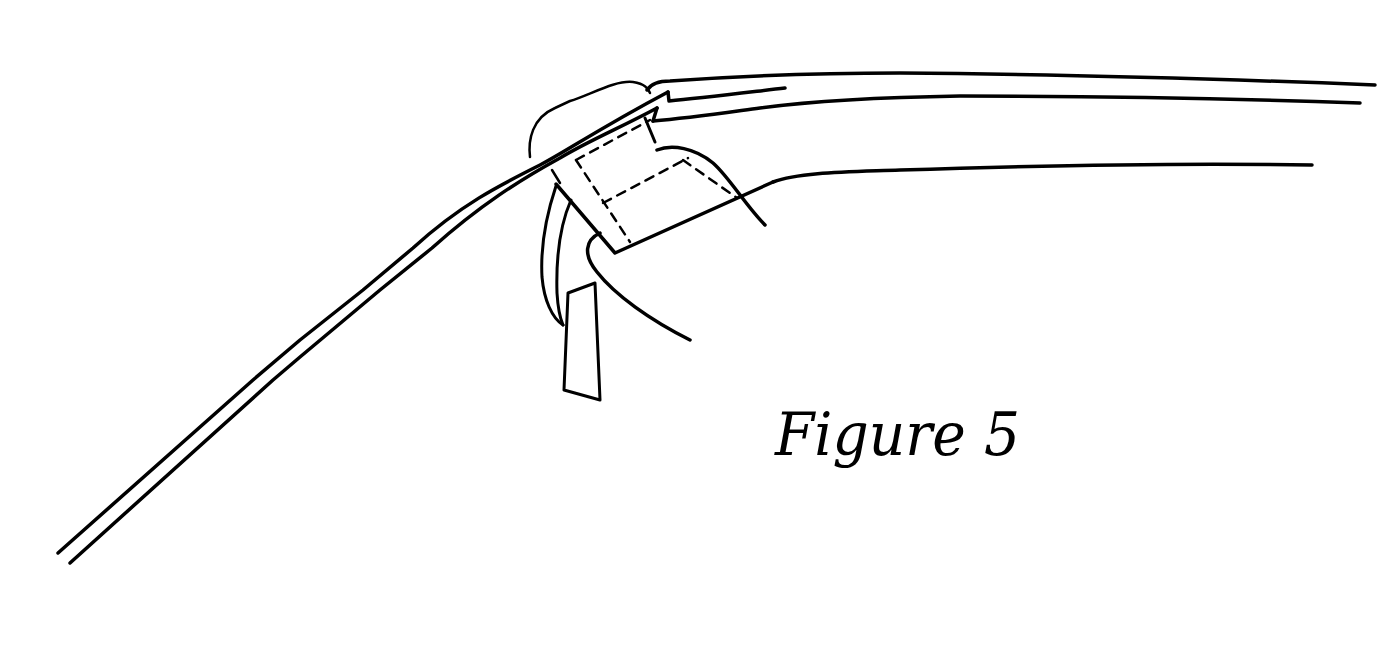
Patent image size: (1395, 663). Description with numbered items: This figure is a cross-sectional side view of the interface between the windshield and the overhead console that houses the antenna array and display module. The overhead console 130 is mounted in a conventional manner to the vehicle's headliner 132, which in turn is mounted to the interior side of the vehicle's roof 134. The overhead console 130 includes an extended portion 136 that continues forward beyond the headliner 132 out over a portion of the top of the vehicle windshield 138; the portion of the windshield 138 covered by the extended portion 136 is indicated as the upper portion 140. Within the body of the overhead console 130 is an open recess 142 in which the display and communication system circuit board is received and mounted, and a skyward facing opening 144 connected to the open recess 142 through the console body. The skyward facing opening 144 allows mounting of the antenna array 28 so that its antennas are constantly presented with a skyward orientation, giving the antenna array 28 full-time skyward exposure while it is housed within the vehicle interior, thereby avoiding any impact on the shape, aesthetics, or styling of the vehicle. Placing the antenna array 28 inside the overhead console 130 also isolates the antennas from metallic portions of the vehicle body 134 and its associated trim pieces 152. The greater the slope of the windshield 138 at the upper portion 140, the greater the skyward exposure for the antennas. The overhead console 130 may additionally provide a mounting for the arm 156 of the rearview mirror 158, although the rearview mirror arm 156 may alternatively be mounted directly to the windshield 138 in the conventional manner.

The antenna array 28 is at (552, 185).
The overhead console 130 is at (903, 183).
The headliner 132 is at (975, 103).
The roof 134 is at (835, 75).
The extended portion 136 is at (690, 340).
The windshield 138 is at (237, 412).
The upper portion of the windshield 140 is at (590, 106).
The open recess 142 is at (665, 236).
The skyward facing opening 144 is at (765, 225).
The trim pieces 152 is at (660, 77).
The rearview mirror arm 156 is at (537, 248).
The rearview mirror 158 is at (565, 353).